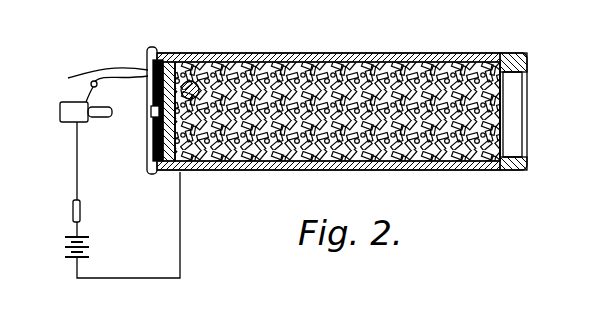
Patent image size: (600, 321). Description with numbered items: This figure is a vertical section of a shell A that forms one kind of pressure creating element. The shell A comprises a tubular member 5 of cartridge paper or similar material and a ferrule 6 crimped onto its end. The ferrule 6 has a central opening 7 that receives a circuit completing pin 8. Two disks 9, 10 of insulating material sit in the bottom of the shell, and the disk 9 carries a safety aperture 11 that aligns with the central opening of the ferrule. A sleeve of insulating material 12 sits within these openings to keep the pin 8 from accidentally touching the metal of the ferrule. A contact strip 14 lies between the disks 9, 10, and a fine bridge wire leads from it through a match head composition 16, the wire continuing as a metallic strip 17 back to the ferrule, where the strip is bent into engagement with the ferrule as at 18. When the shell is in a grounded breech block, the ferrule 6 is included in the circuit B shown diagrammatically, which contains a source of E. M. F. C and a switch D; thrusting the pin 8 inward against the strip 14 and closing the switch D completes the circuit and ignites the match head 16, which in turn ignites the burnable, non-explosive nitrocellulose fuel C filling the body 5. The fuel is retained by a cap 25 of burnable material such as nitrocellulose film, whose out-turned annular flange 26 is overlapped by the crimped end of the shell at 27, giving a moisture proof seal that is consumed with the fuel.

The tubular member 5 is at (333, 62).
The ferrule 6 is at (200, 50).
The central opening 7 is at (151, 111).
The circuit completing pin 8 is at (104, 94).
The disk 9 is at (150, 64).
The disk 10 is at (162, 62).
The safety aperture 11 is at (151, 150).
The sleeve of insulating material 12 is at (151, 104).
The contact strip 14 is at (200, 158).
The match head composition 16 is at (216, 78).
The metallic strip 17 is at (108, 65).
The bent engagement of strip with ferrule 18 is at (70, 78).
The cap 25 is at (503, 115).
The out-turned annular flange 26 is at (508, 56).
The crimp 27 is at (527, 72).
The shell A is at (433, 47).
The circuit B is at (134, 278).
The source of E. M. F. C is at (384, 62).
The switch D is at (72, 211).